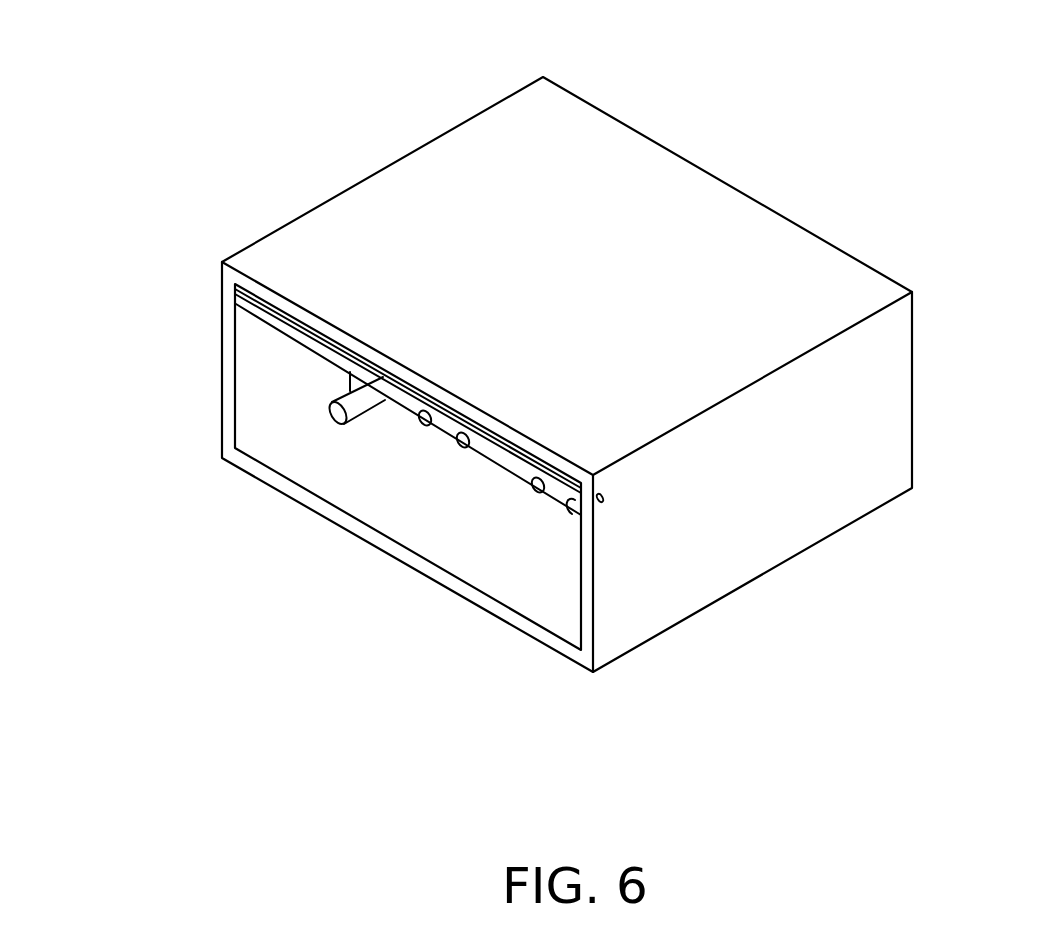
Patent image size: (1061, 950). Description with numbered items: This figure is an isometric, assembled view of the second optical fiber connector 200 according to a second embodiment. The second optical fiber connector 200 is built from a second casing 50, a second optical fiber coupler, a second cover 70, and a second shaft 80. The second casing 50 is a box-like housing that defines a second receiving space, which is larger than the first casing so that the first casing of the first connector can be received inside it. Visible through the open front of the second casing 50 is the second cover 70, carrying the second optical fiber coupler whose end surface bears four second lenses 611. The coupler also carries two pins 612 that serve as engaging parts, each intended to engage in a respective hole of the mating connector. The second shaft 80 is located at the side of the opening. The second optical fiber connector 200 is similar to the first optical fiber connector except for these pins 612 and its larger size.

The second optical fiber connector 200 is at (280, 90).
The second casing 50 is at (720, 250).
The second cover 70 is at (266, 312).
The second lenses 611 is at (463, 450).
The pins 612 is at (357, 404).
The second shaft 80 is at (606, 500).